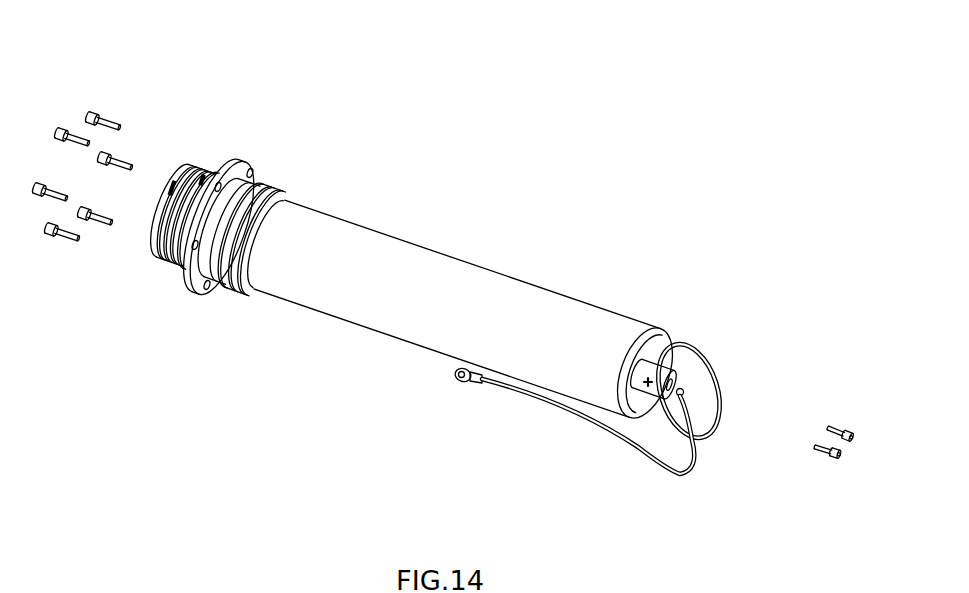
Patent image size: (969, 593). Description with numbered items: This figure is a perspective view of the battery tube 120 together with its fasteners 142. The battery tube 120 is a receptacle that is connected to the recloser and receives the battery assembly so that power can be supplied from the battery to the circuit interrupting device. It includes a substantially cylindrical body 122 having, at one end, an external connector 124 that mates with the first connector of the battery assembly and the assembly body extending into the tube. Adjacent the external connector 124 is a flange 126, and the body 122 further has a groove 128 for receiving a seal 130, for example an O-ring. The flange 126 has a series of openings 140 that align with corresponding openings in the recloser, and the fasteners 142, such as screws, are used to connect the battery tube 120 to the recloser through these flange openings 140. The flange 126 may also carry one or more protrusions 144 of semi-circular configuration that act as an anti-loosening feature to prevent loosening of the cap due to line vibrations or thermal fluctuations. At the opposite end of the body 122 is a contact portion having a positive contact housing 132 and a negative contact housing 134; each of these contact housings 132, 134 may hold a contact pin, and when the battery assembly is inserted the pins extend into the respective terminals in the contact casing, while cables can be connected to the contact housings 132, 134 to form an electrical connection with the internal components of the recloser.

The battery tube 120 is at (472, 215).
The substantially cylindrical body 122 is at (350, 315).
The external connector 124 is at (160, 252).
The flange 126 is at (193, 285).
The groove 128 is at (262, 188).
The seal 130 is at (708, 340).
The positive contact housing 132 is at (642, 393).
The negative contact housing 134 is at (665, 350).
The openings 140 is at (209, 290).
The fasteners 142 is at (97, 113).
The protrusions 144 is at (222, 165).